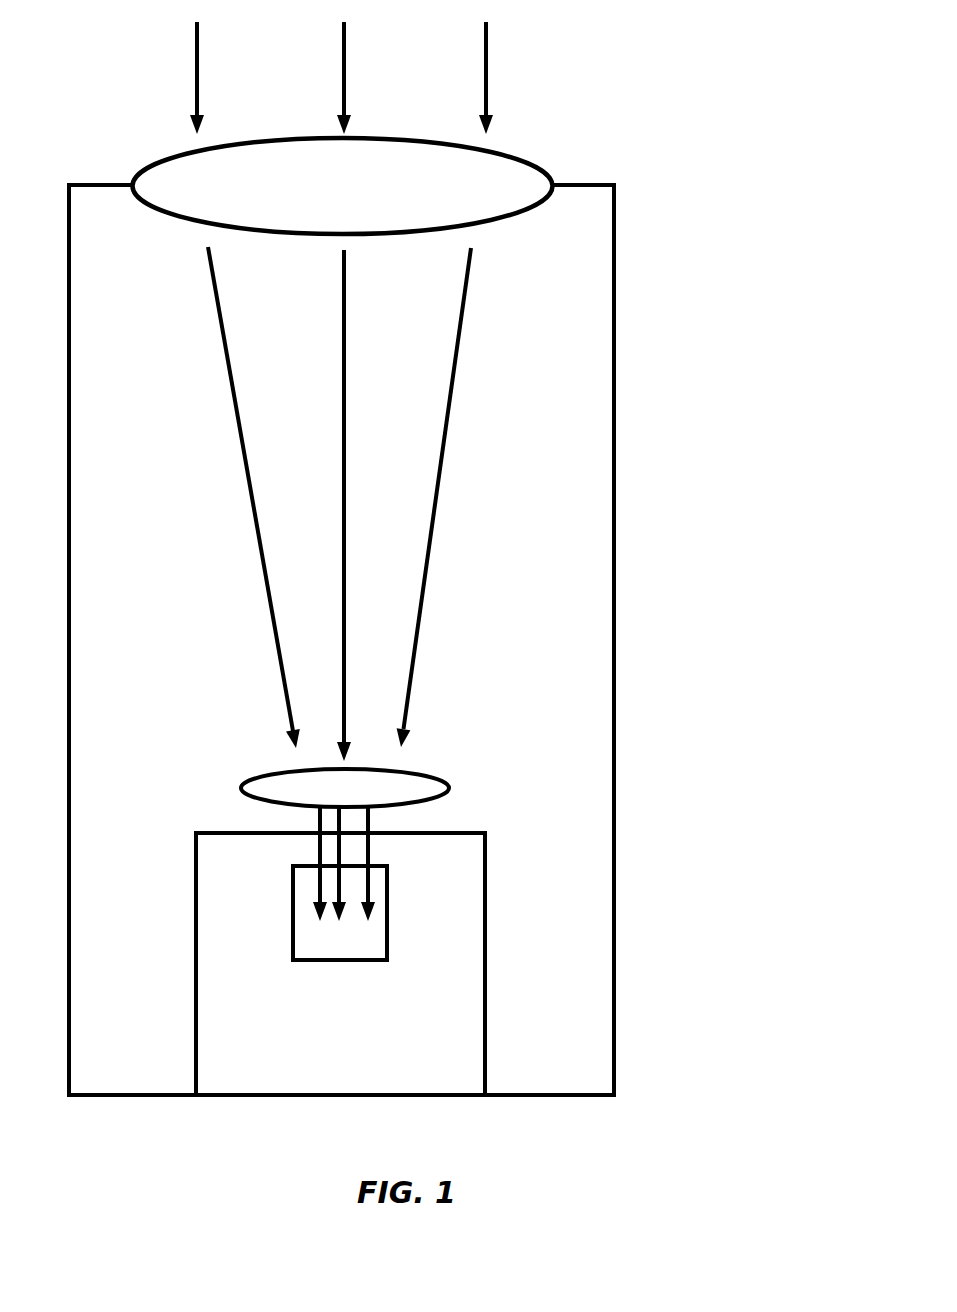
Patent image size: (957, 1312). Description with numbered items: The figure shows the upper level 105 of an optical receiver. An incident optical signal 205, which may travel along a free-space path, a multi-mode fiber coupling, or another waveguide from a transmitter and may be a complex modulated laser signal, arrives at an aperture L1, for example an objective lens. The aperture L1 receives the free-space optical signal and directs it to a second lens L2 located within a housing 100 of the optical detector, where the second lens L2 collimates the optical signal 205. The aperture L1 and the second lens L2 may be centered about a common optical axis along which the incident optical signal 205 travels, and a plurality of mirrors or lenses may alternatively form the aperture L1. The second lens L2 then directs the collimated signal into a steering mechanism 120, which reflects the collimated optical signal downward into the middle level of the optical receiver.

The housing 100 is at (614, 403).
The upper level 105 is at (565, 669).
The incident optical signal 205 is at (486, 50).
The aperture L1 is at (357, 186).
The second lens L2 is at (371, 788).
The steering mechanism 120 is at (387, 922).